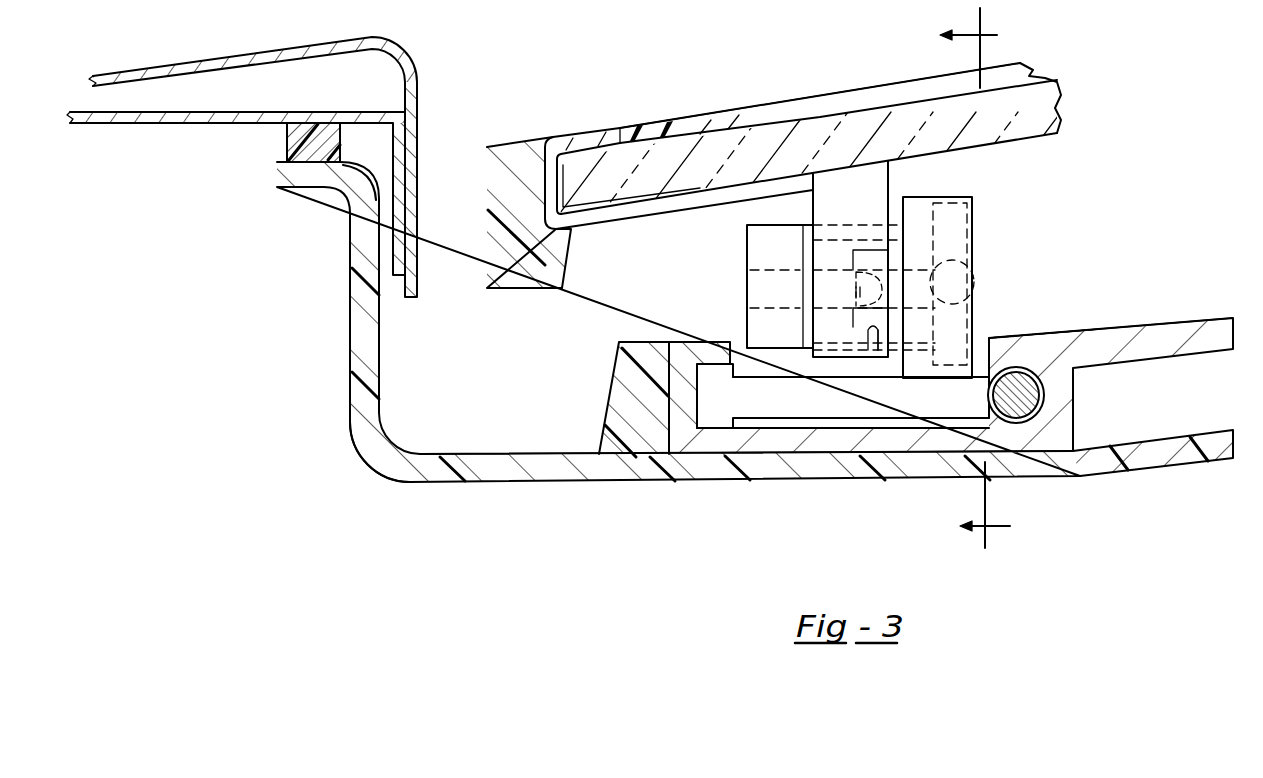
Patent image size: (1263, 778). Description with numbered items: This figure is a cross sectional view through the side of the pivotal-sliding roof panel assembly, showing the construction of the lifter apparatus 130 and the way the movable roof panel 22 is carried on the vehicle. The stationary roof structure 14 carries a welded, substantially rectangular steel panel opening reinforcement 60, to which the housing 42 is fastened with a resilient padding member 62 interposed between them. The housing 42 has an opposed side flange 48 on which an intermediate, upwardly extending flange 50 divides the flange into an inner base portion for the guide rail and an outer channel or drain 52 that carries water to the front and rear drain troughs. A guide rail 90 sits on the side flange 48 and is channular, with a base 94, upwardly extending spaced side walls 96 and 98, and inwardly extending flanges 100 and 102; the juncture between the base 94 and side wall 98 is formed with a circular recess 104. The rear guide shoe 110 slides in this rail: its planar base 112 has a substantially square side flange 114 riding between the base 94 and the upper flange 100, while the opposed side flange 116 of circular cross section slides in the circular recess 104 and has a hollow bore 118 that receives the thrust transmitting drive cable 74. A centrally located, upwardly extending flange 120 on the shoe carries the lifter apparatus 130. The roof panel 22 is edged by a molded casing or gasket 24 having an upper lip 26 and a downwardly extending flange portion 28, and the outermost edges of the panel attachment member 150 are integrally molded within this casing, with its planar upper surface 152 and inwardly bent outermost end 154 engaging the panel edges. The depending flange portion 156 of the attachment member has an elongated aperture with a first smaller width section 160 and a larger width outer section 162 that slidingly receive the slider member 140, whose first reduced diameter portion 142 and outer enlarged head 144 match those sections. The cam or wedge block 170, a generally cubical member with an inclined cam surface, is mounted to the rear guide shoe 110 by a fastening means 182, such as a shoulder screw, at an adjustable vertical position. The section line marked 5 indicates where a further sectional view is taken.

The stationary roof structure 14 is at (222, 57).
The movable roof panel 22 is at (852, 120).
The casing or gasket 24 is at (636, 62).
The upper lip 26 is at (553, 137).
The downwardly extending flange portion 28 is at (486, 185).
The housing 42 is at (342, 373).
The side flange 48 is at (655, 480).
The intermediate upwardly extending flange 50 is at (612, 402).
The outer channel or drain trough 52 is at (425, 451).
The panel opening reinforcement 60 is at (166, 124).
The resilient padding member 62 is at (287, 149).
The thrust transmitting drive cable 74 is at (1040, 404).
The guide track or rail 90 is at (1103, 300).
The base 94 is at (817, 448).
The side wall 96 is at (680, 377).
The side wall 98 is at (1064, 391).
The inwardly extending flange 100 is at (705, 344).
The inwardly extending flange 102 is at (1035, 303).
The circular recess 104 is at (1040, 377).
The rear guide shoe 110 is at (859, 402).
The planar base 112 is at (780, 414).
The side flange 114 is at (718, 418).
The side flange 116 is at (1003, 455).
The hollow bore 118 is at (1013, 416).
The upwardly extending flange 120 is at (975, 228).
The lifter apparatus 130 is at (738, 251).
The slider member 140 is at (836, 293).
The first reduced diameter portion 142 is at (824, 280).
The outer enlarged head 144 is at (872, 258).
The panel attachment member 150 is at (903, 175).
The planar upper surface 152 is at (727, 153).
The outermost end 154 is at (617, 140).
The depending flange portion 156 is at (880, 201).
The first smaller width section 160 is at (828, 307).
The larger width outer section 162 is at (873, 350).
The cam or wedge block 170 is at (896, 354).
The fastening means 182 is at (975, 253).
The section line 5- 5 is at (958, 278).